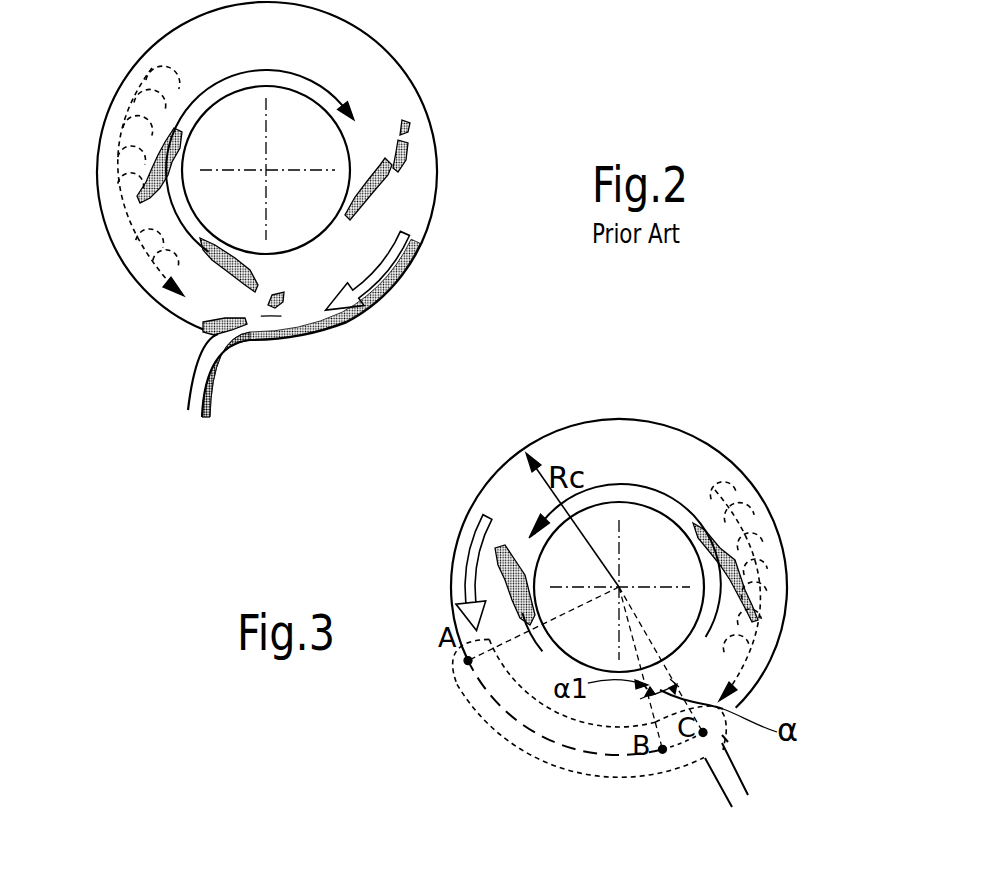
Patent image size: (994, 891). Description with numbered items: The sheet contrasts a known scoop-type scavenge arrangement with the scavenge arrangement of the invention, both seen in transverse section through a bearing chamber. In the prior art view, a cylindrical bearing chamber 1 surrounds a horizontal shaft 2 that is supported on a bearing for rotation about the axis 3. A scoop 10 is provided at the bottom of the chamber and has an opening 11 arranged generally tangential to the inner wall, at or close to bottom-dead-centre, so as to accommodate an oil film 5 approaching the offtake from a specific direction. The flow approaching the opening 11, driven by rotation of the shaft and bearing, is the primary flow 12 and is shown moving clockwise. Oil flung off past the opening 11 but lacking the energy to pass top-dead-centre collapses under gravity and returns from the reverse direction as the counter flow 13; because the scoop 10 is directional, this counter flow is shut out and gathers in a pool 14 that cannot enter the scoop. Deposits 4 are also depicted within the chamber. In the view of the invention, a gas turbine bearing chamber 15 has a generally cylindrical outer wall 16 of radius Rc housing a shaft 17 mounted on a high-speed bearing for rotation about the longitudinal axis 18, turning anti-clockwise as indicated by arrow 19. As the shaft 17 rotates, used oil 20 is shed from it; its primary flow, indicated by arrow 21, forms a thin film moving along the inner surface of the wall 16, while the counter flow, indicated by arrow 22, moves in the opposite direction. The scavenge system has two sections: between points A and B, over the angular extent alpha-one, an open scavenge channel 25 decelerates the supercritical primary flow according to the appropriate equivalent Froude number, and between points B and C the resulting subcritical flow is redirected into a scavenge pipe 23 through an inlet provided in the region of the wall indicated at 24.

In FIG. 2, the bearing chamber 1 is at (137, 58).
In FIG. 2, the shaft 2 is at (333, 150).
In FIG. 2, the axis 3 is at (267, 172).
In FIG. 2, the particle deposit 4 is at (345, 182).
In FIG. 2, the oil film 5 is at (397, 277).
In FIG. 2, the scoop 10 is at (262, 314).
In FIG. 2, the opening 11 is at (303, 332).
In FIG. 2, the primary flow 12 is at (405, 238).
In FIG. 2, the counter flow 13 is at (130, 245).
In FIG. 2, the pool 14 is at (247, 327).
In FIG. 3, the bearing chamber 15 is at (772, 483).
In FIG. 3, the outer wall 16 is at (749, 483).
In FIG. 3, the shaft 17 is at (636, 505).
In FIG. 3, the longitudinal axis 18 is at (620, 587).
In FIG. 3, the arrow 19 is at (599, 487).
In FIG. 3, the used oil 20 is at (516, 560).
In FIG. 3, the arrow 21 is at (468, 572).
In FIG. 3, the arrow 22 is at (783, 587).
In FIG. 3, the scavenge pipe 23 is at (718, 783).
In FIG. 3, the inlet region 24 is at (727, 738).
In FIG. 3, the scavenge channel 25 is at (530, 733).